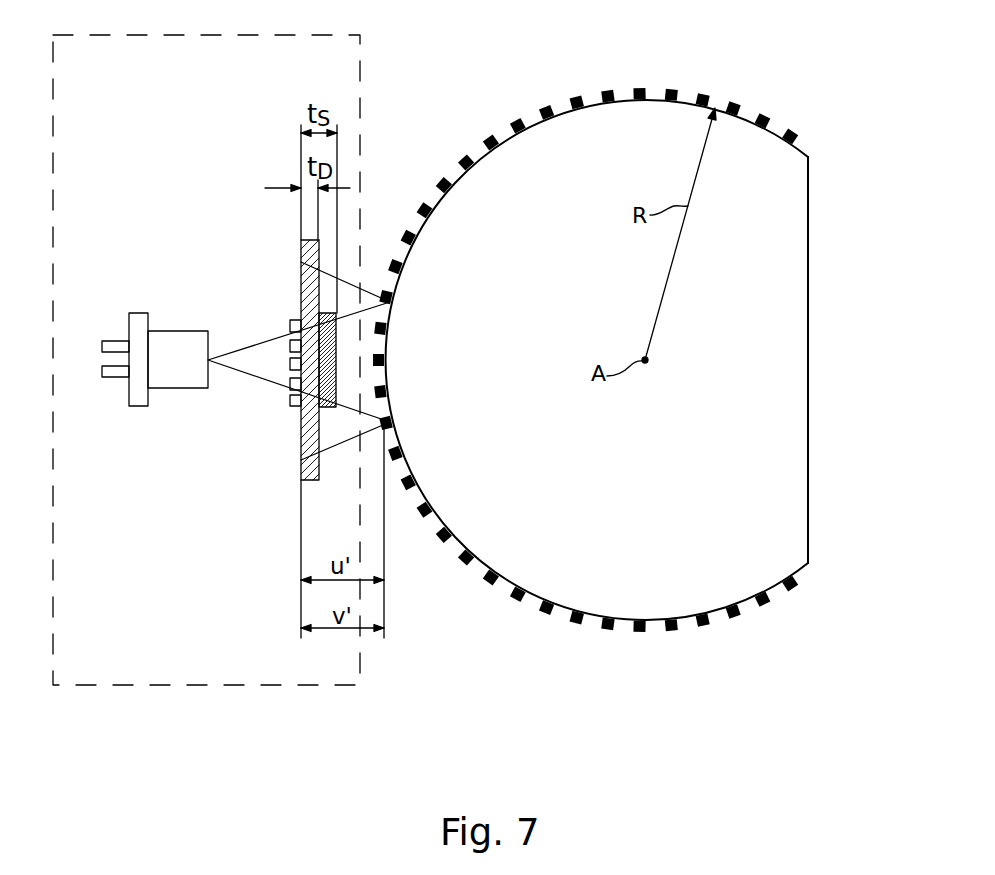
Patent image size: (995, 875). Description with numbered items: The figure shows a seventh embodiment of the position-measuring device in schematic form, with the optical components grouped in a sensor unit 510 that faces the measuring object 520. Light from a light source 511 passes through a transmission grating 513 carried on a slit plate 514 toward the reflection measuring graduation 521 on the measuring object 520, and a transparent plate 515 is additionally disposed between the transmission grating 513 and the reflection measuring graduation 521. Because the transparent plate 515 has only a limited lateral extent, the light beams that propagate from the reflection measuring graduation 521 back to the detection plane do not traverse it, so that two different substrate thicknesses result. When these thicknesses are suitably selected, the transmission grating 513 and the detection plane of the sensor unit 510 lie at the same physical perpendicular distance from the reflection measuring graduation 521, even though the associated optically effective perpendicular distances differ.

The sensor unit 510 is at (197, 686).
The light source 511 is at (178, 335).
The detector 513 is at (292, 327).
The slit plate 514 is at (301, 470).
The slit aperture 515 is at (298, 393).
The measuring object 520 is at (797, 193).
The surface marking 521 is at (618, 99).